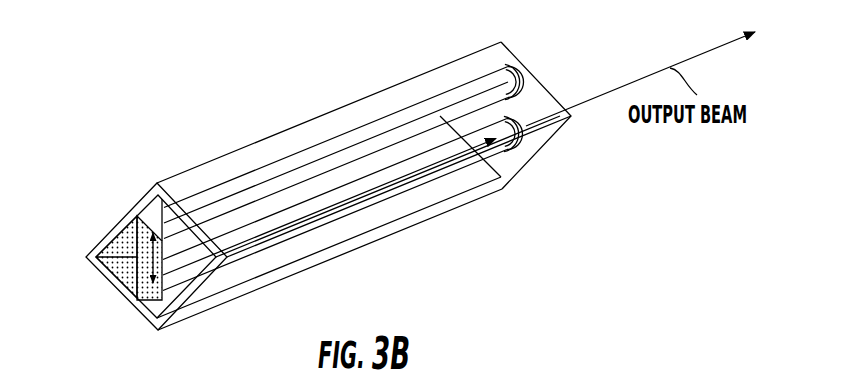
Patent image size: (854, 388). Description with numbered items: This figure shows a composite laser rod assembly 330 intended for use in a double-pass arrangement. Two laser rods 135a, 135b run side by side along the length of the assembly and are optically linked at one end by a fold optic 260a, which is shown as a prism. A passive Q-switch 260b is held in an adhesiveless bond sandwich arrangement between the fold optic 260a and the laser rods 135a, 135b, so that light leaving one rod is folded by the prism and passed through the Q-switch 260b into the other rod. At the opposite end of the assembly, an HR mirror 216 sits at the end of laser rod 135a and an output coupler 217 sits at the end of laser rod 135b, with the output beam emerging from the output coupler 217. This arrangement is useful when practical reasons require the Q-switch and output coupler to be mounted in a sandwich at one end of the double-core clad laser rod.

The composite laser rod assembly 330 is at (188, 108).
The laser rod 135a is at (300, 153).
The laser rod 135b is at (357, 216).
The fold optic 260a is at (145, 240).
The passive Q-switch 260b is at (162, 220).
The HR mirror 216 is at (541, 77).
The output coupler 217 is at (530, 140).